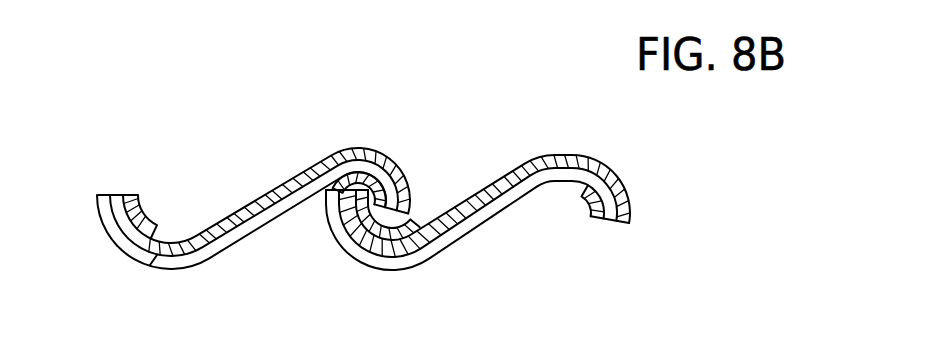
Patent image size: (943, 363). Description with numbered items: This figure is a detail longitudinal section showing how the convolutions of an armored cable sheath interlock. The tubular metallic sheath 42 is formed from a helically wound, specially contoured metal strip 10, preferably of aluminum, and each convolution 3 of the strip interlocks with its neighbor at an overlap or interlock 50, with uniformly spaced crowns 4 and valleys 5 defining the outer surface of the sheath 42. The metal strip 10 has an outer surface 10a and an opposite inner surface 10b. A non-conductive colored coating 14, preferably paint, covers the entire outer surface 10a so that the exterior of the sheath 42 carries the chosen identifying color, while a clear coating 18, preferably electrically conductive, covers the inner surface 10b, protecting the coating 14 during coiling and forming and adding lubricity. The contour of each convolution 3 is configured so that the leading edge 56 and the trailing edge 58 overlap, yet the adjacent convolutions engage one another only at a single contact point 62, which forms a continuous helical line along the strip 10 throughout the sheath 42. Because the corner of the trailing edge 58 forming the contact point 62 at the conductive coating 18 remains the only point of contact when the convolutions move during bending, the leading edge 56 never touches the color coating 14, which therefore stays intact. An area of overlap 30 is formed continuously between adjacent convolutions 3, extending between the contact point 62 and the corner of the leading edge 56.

The convolution 3 is at (288, 168).
The crown 4 is at (351, 147).
The valley 5 is at (160, 220).
The metal strip 10 is at (157, 228).
The outer surface 10a is at (234, 212).
The inner surface 10b is at (145, 270).
The coating 14 is at (131, 195).
The clear coating 18 is at (217, 258).
The area of overlap 30 is at (326, 217).
The tubular metallic sheath 42 is at (527, 157).
The interlock 50 is at (389, 201).
The leading edge 56 is at (358, 207).
The trailing edge 58 is at (101, 192).
The contact point 62 is at (398, 175).